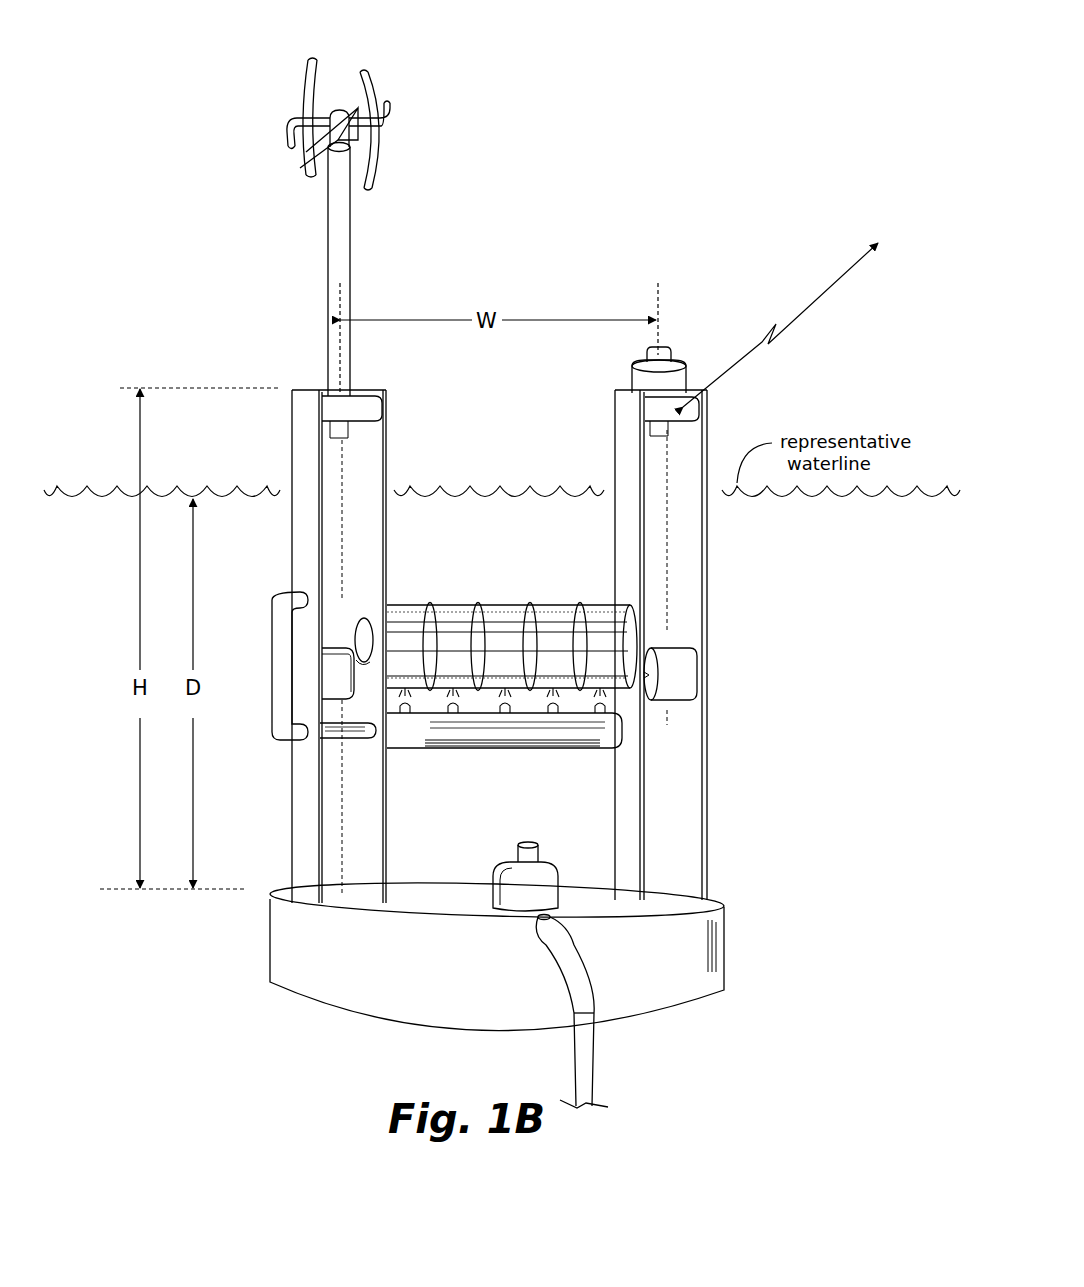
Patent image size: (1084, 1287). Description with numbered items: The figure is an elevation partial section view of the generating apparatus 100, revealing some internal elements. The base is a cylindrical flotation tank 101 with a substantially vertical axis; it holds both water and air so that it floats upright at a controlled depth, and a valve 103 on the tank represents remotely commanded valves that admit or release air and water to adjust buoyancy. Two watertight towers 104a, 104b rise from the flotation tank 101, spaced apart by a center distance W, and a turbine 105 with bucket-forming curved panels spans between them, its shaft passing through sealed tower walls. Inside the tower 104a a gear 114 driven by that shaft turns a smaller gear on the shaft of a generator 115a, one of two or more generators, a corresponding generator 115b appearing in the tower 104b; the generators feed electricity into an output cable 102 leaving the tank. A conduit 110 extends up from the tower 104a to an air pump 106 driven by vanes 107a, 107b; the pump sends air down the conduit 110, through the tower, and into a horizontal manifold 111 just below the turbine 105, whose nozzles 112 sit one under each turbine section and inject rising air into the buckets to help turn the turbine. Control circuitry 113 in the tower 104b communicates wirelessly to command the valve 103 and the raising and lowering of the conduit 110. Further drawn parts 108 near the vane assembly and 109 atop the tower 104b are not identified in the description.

The generating apparatus 100 is at (566, 305).
The flotation tank 101 is at (732, 960).
The output cable 102 is at (572, 958).
The valve 103 is at (505, 885).
The tower 104a is at (388, 522).
The tower 104b is at (710, 516).
The turbine 105 is at (487, 600).
The air pump 106 is at (338, 106).
The vane 107a is at (302, 70).
The vane 107b is at (397, 110).
The strut 108 is at (314, 150).
The cap of right column 109 is at (661, 350).
The conduit 110 is at (352, 237).
The manifold 111 is at (548, 750).
The nozzles 112 is at (447, 710).
The control circuitry 113 is at (651, 405).
The gear 114 is at (352, 403).
The generator 115a is at (330, 645).
The right mount 115b is at (672, 653).